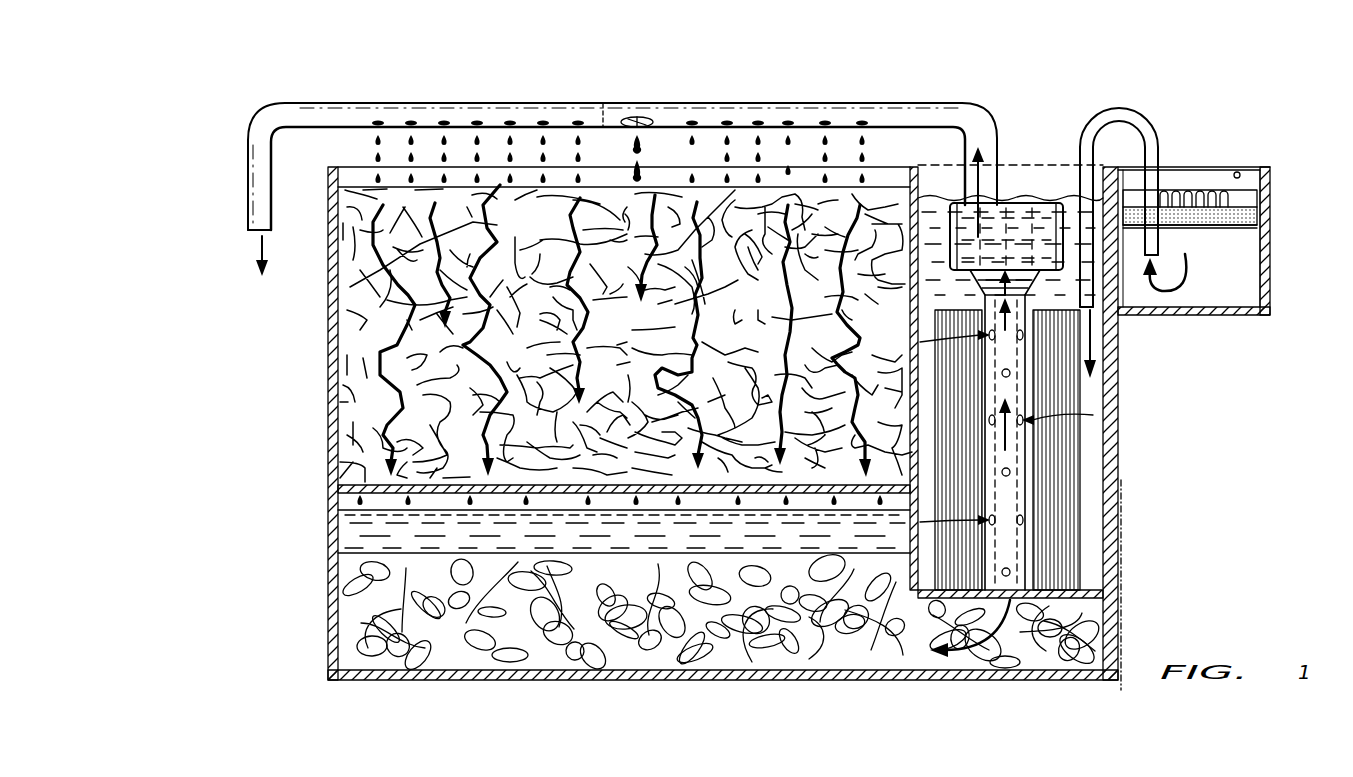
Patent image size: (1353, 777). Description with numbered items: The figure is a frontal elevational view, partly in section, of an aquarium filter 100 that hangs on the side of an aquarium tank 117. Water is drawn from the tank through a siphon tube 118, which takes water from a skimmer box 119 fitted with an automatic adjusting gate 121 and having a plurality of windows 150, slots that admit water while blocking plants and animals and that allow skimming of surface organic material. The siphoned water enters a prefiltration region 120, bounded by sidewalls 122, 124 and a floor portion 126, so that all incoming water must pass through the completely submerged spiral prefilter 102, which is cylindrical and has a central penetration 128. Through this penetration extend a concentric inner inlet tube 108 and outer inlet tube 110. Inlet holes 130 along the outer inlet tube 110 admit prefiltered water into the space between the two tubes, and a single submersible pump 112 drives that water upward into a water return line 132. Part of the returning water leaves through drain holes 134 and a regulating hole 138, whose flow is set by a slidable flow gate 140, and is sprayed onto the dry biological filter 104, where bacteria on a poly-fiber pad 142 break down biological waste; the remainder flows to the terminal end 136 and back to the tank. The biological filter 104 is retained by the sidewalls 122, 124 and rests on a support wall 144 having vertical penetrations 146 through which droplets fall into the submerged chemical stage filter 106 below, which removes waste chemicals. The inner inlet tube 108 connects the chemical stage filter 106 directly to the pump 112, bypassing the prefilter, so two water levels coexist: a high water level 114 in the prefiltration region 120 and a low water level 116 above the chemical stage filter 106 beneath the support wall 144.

The aquarium filter 100 is at (1104, 50).
The spiral prefilter 102 is at (1057, 467).
The dry biological filter 104 is at (350, 402).
The chemical stage filter 106 is at (380, 615).
The inner inlet tube 108 is at (1023, 538).
The outer inlet tube 110 is at (1033, 403).
The submersible pump 112 is at (1037, 207).
The high water level 114 is at (1003, 222).
The low water level 116 is at (345, 568).
The aquarium tank 117 is at (1283, 167).
The siphon tube 118 is at (1160, 138).
The skimmer box 119 is at (1270, 260).
The prefiltration region 120 is at (1093, 385).
The automatic adjusting gate 121 is at (1257, 208).
The sidewall 122 is at (333, 418).
The sidewall 124 is at (930, 615).
The floor portion 126 is at (1100, 568).
The penetration 128 is at (1043, 598).
The inlet holes 130 is at (1028, 335).
The water return line 132 is at (320, 110).
The drain holes 134 is at (444, 122).
The terminal end 136 is at (250, 228).
The regulating hole 138 is at (645, 122).
The slidable flow gate 140 is at (598, 122).
The poly-fiber pad 142 is at (378, 350).
The support wall 144 is at (340, 500).
The vertical penetrations 146 is at (365, 490).
The windows 150 is at (1192, 195).